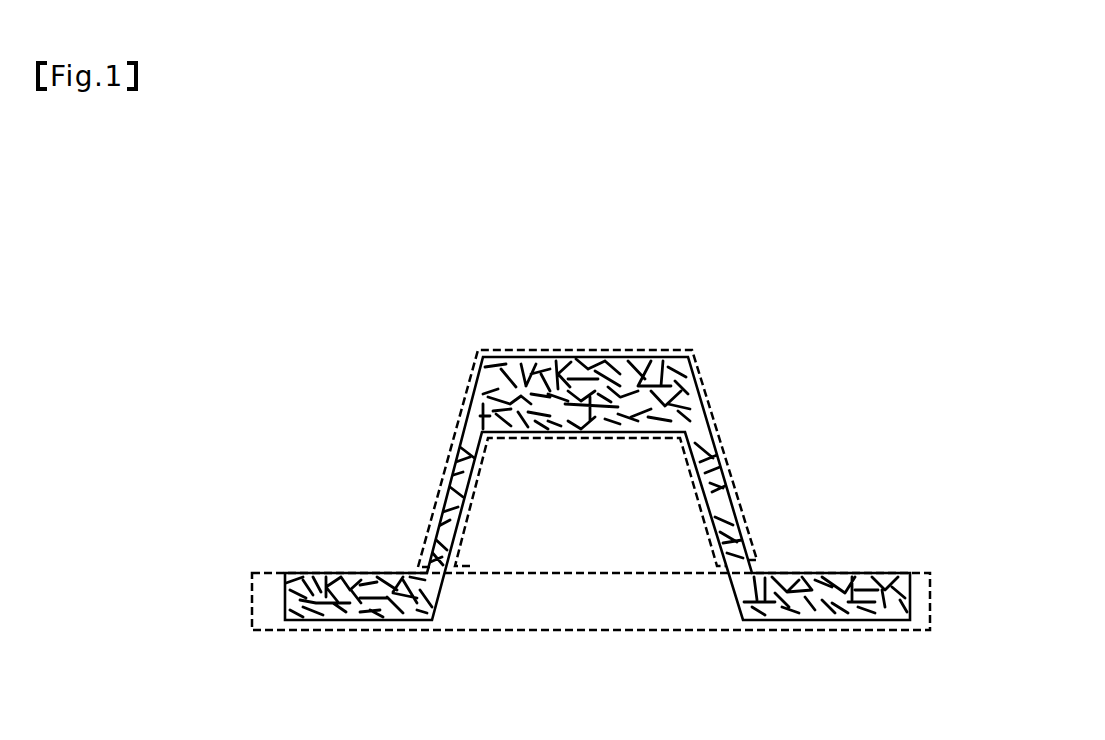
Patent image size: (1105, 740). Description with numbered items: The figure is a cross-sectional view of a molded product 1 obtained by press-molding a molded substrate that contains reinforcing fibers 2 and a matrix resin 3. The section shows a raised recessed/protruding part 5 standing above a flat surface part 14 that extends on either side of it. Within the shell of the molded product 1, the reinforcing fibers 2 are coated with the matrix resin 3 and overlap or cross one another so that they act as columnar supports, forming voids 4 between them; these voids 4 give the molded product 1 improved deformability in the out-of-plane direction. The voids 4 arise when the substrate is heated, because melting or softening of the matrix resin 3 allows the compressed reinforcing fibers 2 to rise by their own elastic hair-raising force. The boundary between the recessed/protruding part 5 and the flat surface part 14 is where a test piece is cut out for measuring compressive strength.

The molded product 1 is at (752, 296).
The reinforcing fibers 2 is at (697, 377).
The matrix resin 3 is at (710, 418).
The voids 4 is at (722, 458).
The recessed/protruding part 5 is at (743, 521).
The flat surface part 14 is at (910, 597).